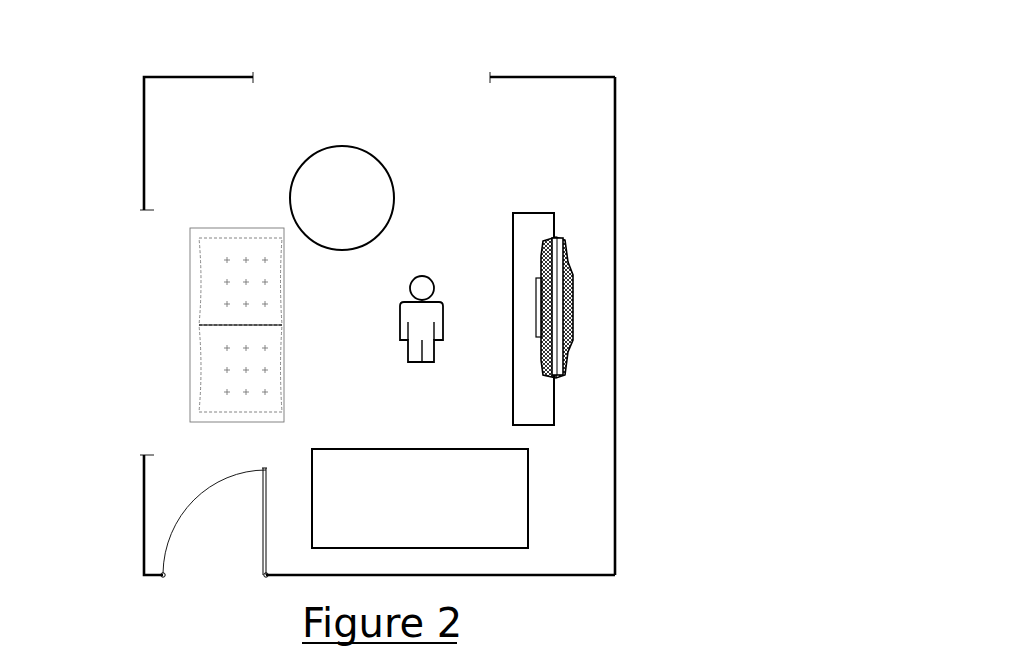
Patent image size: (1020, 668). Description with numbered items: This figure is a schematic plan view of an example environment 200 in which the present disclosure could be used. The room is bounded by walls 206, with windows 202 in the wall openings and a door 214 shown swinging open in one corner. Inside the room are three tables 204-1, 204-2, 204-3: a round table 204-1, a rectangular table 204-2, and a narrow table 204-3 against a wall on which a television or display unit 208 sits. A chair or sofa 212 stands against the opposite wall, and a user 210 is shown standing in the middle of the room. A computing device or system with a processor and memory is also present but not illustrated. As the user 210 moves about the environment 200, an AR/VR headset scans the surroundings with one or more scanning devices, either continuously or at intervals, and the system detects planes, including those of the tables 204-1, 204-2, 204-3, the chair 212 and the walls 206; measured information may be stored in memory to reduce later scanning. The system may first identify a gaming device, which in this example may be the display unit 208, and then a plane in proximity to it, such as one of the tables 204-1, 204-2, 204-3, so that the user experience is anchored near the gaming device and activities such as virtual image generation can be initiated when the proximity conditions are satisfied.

The environment 200 is at (68, 91).
The windows 202 is at (353, 77).
The table 204-1 is at (393, 187).
The table 204-2 is at (529, 505).
The table 204-3 is at (554, 400).
The walls 206 is at (613, 98).
The television or display unit 208 is at (574, 300).
The user 210 is at (400, 319).
The chair or sofa 212 is at (283, 393).
The door 214 is at (265, 520).